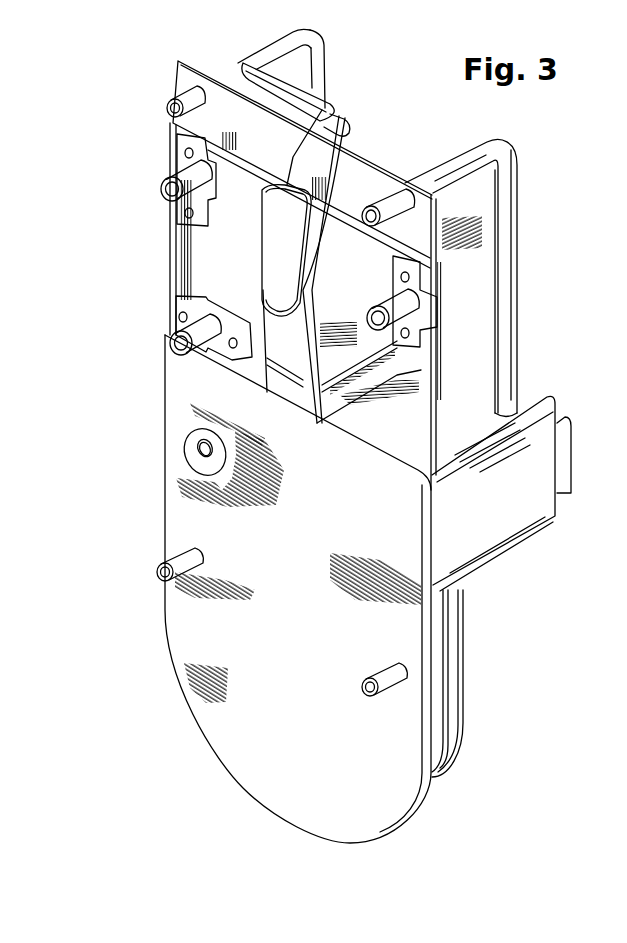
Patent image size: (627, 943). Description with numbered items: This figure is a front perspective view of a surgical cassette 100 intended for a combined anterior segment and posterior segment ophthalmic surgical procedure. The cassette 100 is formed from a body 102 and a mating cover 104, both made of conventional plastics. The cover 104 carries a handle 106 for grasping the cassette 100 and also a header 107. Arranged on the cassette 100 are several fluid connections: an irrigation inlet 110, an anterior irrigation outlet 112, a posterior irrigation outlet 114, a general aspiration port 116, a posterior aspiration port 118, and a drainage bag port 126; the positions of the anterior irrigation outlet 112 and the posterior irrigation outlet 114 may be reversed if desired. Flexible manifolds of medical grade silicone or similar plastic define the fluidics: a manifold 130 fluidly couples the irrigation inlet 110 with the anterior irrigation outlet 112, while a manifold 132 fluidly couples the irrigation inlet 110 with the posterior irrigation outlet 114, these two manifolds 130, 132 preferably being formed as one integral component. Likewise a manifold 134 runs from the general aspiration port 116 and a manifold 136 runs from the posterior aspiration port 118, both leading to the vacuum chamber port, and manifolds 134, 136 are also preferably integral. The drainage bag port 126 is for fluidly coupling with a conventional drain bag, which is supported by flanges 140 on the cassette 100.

The surgical cassette 100 is at (299, 652).
The body 102 is at (513, 516).
The cover 104 is at (397, 529).
The handle 106 is at (340, 116).
The header 107 is at (338, 90).
The irrigation inlet 110 is at (180, 85).
The anterior irrigation outlet 112 is at (392, 316).
The posterior irrigation outlet 114 is at (158, 186).
The general aspiration port 116 is at (168, 340).
The posterior aspiration port 118 is at (390, 210).
The drainage bag port 126 is at (203, 452).
The manifold 130 is at (330, 52).
The manifold 132 is at (267, 44).
The manifold 134 is at (338, 240).
The manifold 136 is at (520, 258).
The flanges 140 is at (160, 572).